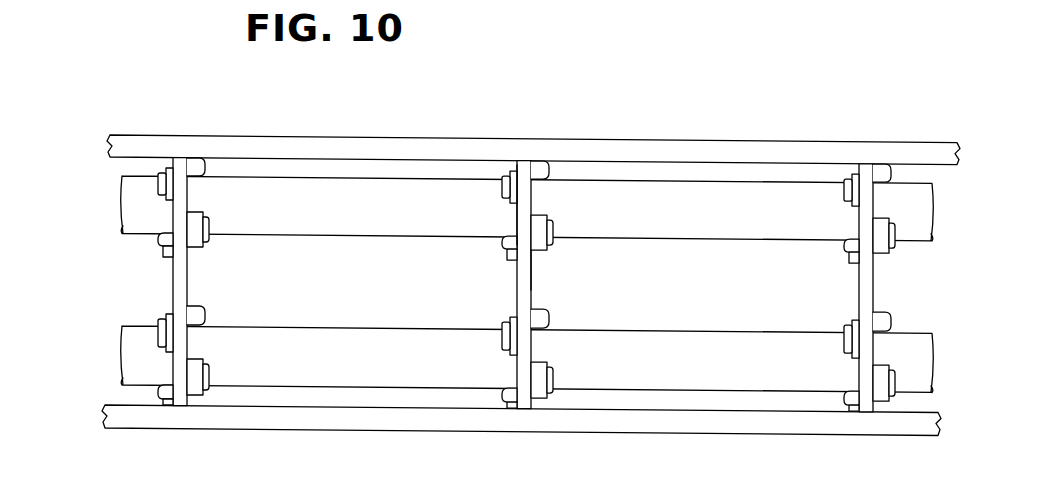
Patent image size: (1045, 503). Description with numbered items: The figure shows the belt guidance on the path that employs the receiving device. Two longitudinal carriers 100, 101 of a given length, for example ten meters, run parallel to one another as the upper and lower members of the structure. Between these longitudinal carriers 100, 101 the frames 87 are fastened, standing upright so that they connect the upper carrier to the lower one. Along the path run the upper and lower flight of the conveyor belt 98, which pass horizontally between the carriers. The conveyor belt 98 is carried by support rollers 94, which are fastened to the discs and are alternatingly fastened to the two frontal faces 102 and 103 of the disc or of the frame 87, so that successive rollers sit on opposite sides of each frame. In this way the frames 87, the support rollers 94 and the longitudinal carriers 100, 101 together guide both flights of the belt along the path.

The frame 87 is at (182, 278).
The support rollers 94 is at (209, 222).
The conveyor belt 98 is at (386, 216).
The longitudinal carrier 100 is at (553, 138).
The longitudinal carrier 101 is at (397, 422).
The frontal face 102 is at (517, 215).
The frontal face 103 is at (531, 285).